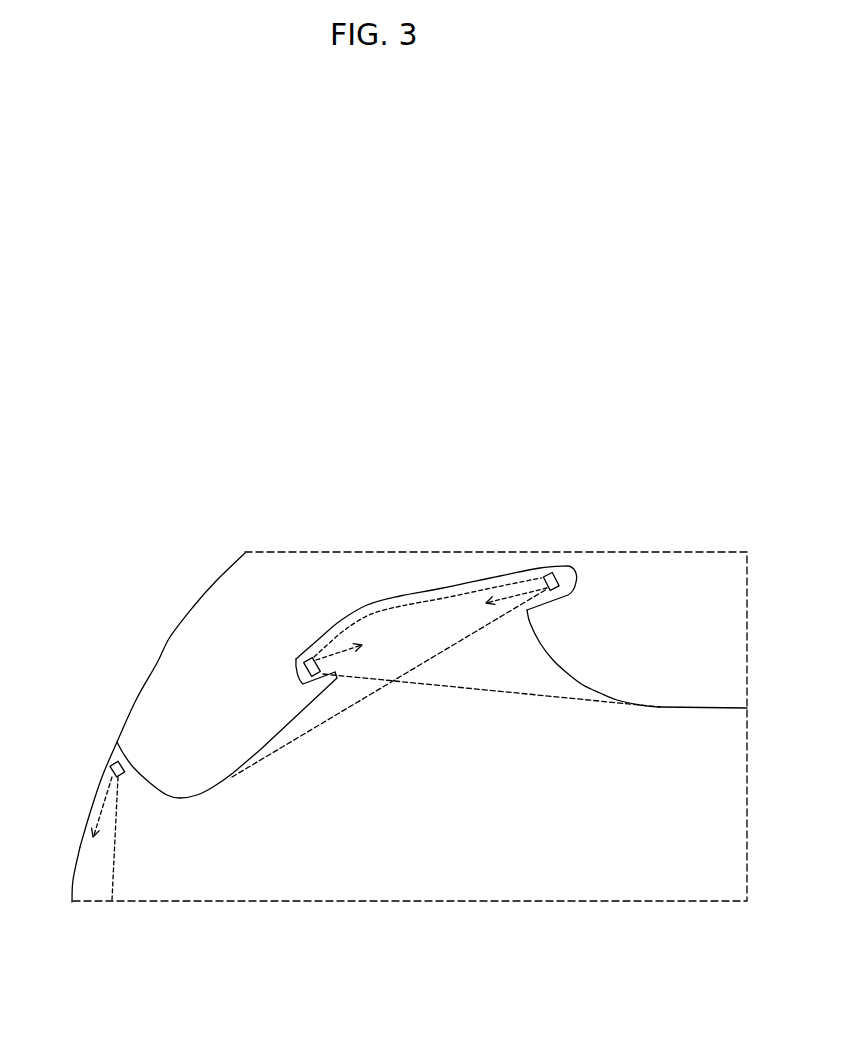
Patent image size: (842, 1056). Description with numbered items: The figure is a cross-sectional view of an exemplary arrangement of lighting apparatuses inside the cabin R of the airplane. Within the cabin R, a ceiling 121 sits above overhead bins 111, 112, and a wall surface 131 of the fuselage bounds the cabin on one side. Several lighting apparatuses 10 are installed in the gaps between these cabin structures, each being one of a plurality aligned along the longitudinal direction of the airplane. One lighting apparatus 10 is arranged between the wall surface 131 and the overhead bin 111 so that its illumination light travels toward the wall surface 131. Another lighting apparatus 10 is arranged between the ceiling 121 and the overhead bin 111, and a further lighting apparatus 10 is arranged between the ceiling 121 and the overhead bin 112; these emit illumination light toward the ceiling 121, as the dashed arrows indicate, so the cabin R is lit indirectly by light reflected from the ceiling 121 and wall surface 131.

The lighting apparatus 10 is at (300, 668).
The overhead bin 111 is at (178, 680).
The overhead bin 112 is at (670, 593).
The ceiling 121 is at (446, 587).
The wall surface 131 is at (76, 886).
The cabin R is at (713, 805).